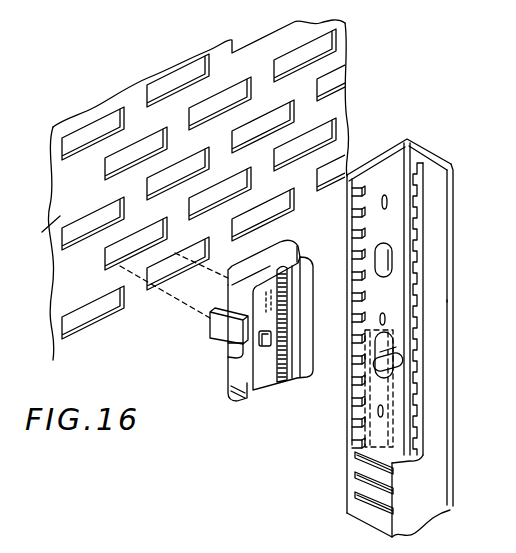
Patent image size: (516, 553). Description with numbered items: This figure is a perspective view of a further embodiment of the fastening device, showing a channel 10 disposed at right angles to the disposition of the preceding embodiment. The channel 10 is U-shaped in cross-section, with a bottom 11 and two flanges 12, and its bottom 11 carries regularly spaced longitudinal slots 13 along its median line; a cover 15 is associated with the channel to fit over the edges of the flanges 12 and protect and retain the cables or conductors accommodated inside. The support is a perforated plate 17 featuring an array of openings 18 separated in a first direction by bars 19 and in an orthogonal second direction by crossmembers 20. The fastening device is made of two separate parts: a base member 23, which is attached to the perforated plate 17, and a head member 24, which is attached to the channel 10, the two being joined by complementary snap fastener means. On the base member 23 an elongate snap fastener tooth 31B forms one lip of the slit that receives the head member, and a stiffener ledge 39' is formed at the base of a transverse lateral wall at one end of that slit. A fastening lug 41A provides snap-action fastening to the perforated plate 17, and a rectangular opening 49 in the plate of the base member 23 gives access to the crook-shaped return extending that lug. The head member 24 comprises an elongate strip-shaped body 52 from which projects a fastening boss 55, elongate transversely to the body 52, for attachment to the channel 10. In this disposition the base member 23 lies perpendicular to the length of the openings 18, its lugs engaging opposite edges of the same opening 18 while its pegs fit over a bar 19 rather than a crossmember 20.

The perforated plate 17 is at (63, 110).
The openings 18 is at (101, 117).
The bars 19 is at (135, 98).
The crossmembers 20 is at (313, 33).
The channel 10 is at (407, 136).
The bottom 11 is at (395, 188).
The flanges 12 is at (422, 165).
The longitudinal slots 13 is at (373, 258).
The cover 15 is at (430, 514).
The head member 24 is at (404, 354).
The fastening boss 55 is at (404, 366).
The body 52 is at (393, 399).
The base member 23 is at (237, 407).
The stiffener ledge 39' is at (275, 249).
The fastening lug 41A is at (205, 338).
The rectangular opening 49 is at (265, 345).
The snap fastener tooth 31B is at (285, 386).